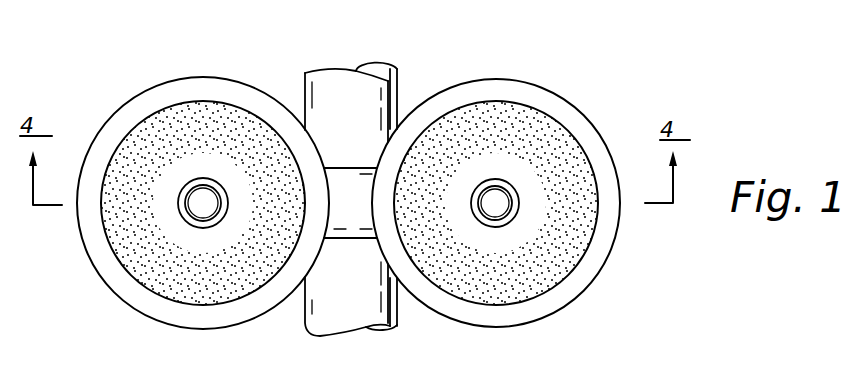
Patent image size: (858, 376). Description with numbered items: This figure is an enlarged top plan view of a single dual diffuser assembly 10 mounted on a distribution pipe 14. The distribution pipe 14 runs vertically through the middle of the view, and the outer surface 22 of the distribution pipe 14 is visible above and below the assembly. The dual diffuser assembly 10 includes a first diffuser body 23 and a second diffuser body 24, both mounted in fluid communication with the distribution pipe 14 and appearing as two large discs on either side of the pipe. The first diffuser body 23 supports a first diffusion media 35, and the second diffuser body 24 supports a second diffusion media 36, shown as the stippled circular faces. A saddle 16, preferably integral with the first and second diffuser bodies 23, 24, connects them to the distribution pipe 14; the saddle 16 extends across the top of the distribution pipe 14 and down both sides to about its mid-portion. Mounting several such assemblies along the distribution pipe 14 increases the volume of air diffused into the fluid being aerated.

The dual diffuser assembly 10 is at (592, 100).
The distribution pipe 14 is at (400, 83).
The saddle 16 is at (345, 172).
The outer surface 22 is at (358, 233).
The first diffuser body 23 is at (555, 297).
The second diffuser body 24 is at (148, 308).
The first diffusion media 35 is at (565, 245).
The second diffusion media 36 is at (138, 255).